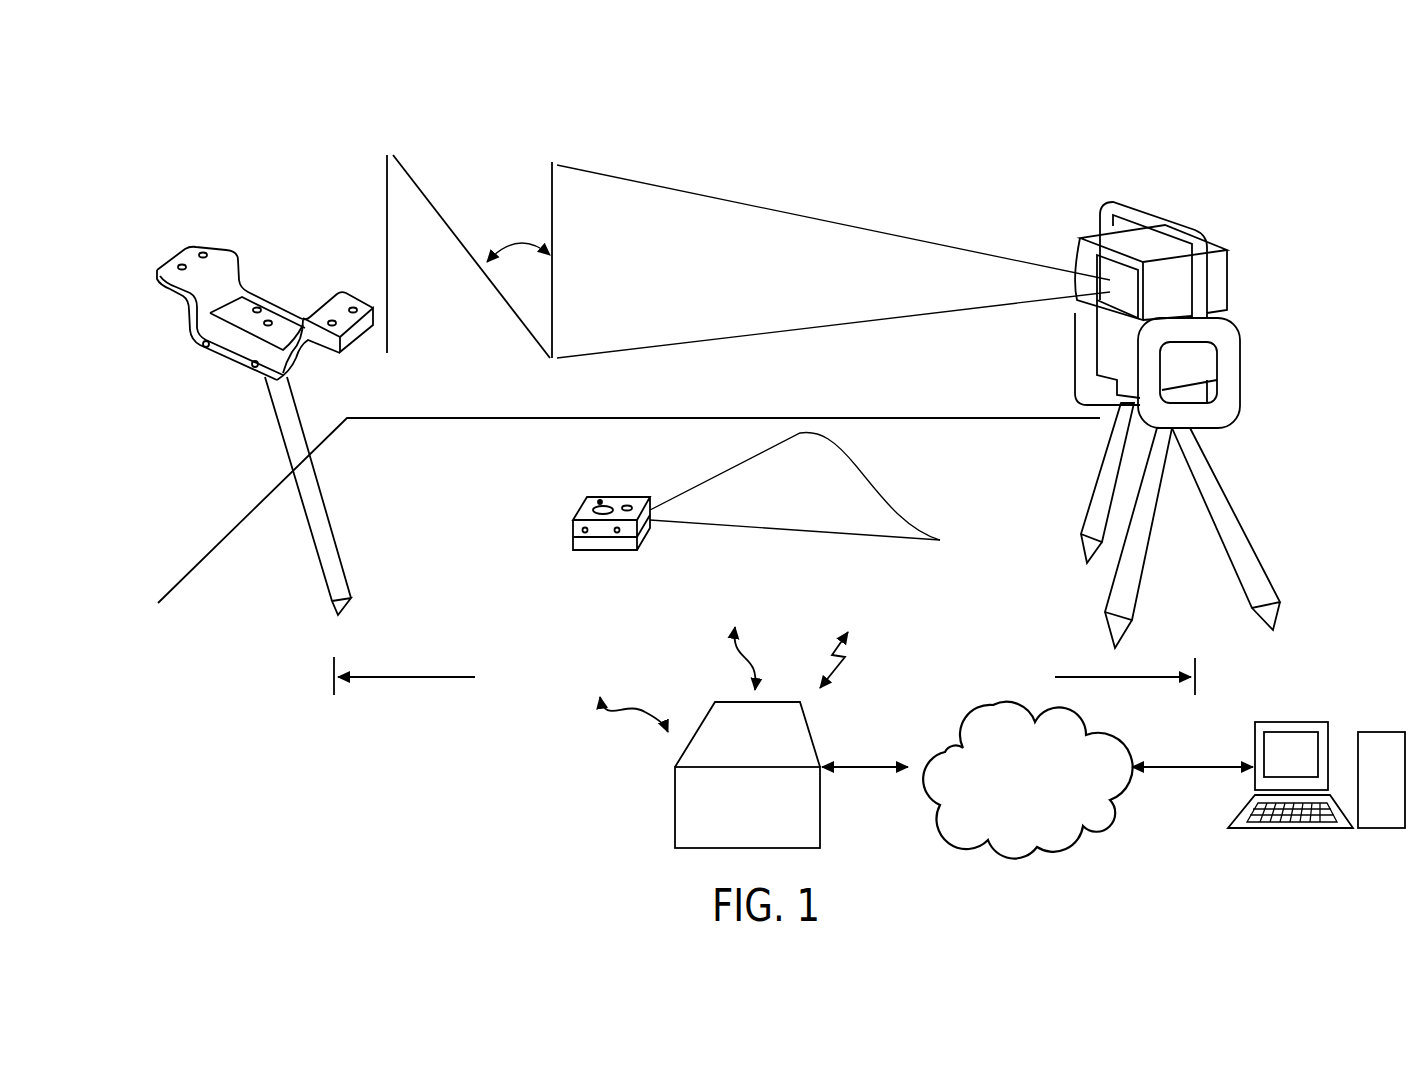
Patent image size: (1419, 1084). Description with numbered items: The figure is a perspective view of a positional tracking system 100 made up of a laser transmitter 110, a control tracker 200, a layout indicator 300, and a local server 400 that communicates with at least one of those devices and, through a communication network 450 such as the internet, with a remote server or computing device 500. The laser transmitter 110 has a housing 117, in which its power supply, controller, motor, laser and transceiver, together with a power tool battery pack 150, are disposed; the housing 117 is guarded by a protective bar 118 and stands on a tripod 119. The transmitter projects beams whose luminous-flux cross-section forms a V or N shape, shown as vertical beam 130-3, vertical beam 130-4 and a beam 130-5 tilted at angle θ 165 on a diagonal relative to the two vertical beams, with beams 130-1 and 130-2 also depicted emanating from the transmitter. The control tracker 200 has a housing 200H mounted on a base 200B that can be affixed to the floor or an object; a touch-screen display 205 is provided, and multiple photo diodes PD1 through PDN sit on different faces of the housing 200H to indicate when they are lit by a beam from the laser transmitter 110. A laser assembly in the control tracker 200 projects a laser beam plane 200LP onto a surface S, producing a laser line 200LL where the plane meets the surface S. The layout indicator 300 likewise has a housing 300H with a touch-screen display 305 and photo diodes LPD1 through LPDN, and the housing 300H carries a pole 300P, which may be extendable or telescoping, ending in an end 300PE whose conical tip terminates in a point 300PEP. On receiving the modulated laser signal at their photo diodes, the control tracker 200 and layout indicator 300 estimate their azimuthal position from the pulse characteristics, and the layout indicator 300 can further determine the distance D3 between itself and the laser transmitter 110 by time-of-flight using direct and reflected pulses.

The positional tracking system 100 is at (1193, 361).
The laser transmitter 110 is at (1193, 404).
The housing 117 is at (1222, 268).
The protective bar 118 is at (1172, 231).
The tripod 119 is at (1215, 473).
The power tool battery pack 150 is at (1122, 402).
The beam 130-1 is at (777, 197).
The beam 130-2 is at (820, 333).
The vertical beam 130-3 is at (552, 290).
The vertical beam 130-4 is at (387, 238).
The tilted beam 130-5 is at (456, 236).
The angle θ 165 is at (510, 210).
The surface S is at (455, 418).
The distance D3 is at (764, 676).
The control tracker 200 is at (728, 534).
The housing 200H is at (580, 498).
The base 200B is at (625, 545).
The display 205 is at (597, 511).
The photo diode PDN is at (600, 500).
The photo diode PD1 is at (585, 530).
The laser beam plane 200LP is at (860, 487).
The laser line 200LL is at (810, 535).
The layout indicator 300 is at (289, 421).
The housing 300H is at (249, 290).
The display 305 is at (232, 313).
The photo diode LPD1 is at (205, 252).
The photo diode LPDN is at (332, 326).
The pole 300P is at (318, 533).
The end 300PE is at (341, 601).
The point 300PEP is at (340, 613).
The local server 400 is at (670, 825).
The communication network 450 is at (998, 709).
The remote server or computing device 500 is at (1345, 708).